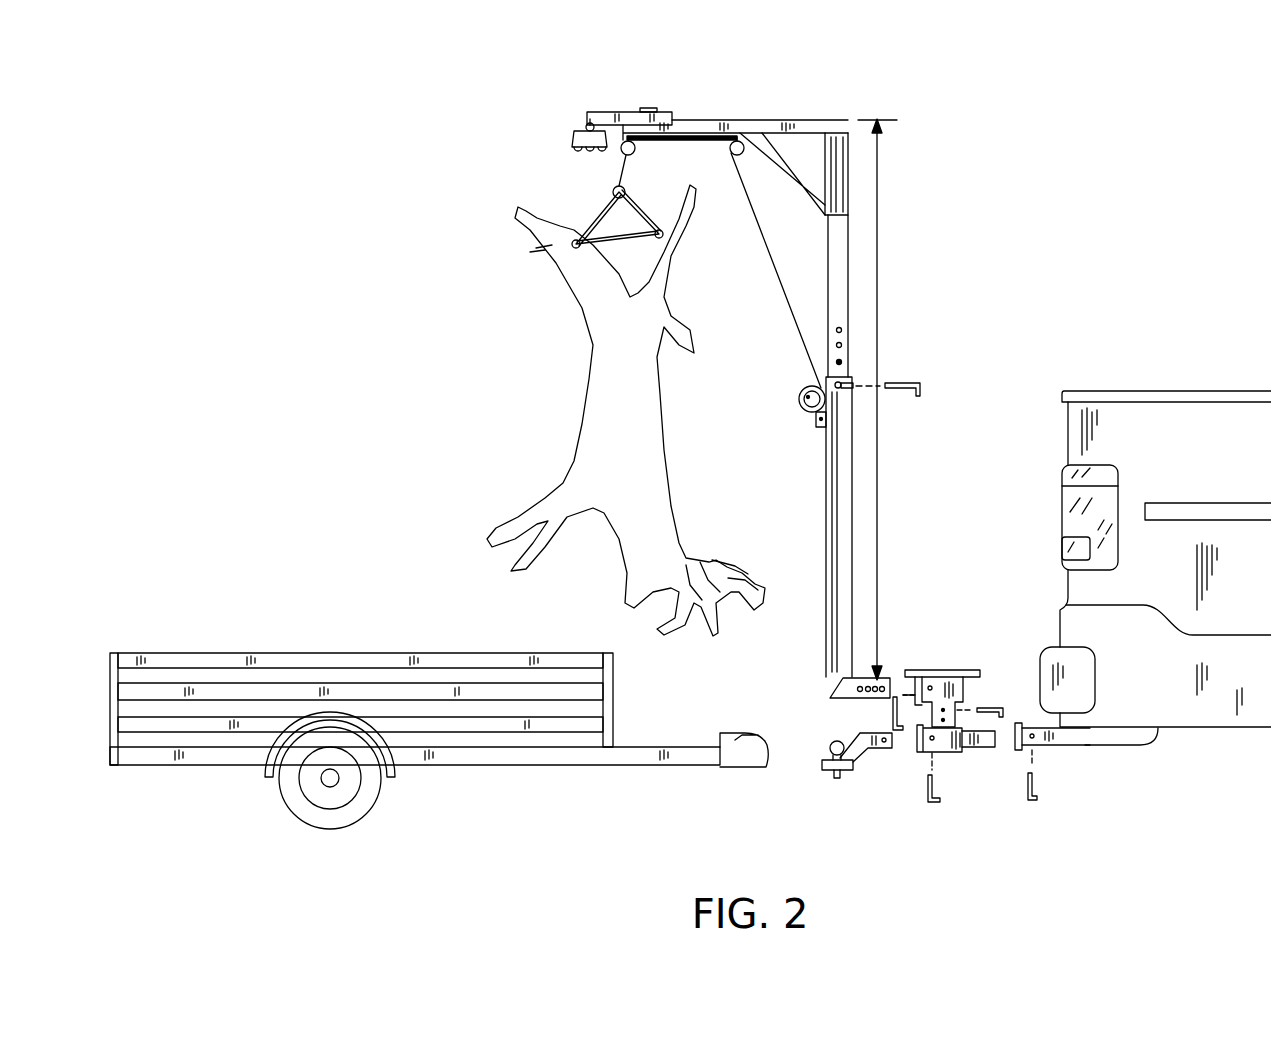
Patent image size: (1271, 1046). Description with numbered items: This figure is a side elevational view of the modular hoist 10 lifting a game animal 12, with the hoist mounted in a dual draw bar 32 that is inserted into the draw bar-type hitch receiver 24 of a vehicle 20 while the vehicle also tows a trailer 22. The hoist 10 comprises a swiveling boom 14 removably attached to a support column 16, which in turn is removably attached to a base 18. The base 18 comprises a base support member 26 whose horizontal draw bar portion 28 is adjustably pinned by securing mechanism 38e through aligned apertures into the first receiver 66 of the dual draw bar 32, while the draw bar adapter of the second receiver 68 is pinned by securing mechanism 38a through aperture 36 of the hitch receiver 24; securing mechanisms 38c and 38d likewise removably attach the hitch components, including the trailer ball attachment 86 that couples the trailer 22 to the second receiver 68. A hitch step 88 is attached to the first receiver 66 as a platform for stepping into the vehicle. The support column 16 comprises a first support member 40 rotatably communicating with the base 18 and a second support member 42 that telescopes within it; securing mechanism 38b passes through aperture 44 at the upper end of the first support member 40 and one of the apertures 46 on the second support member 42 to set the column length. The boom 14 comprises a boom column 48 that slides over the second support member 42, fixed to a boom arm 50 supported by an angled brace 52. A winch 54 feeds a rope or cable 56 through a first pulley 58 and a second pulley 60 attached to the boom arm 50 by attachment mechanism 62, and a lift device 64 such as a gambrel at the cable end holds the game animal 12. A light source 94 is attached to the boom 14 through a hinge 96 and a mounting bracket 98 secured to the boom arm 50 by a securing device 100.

The modular hoist 10 is at (998, 222).
The game animal 12 is at (600, 387).
The swiveling boom 14 is at (767, 107).
The support column 16 is at (792, 504).
The base 18 is at (786, 702).
The vehicle 20 is at (1181, 422).
The trailer 22 is at (695, 757).
The draw bar-type hitch receiver 24 is at (1132, 735).
The base support member 26 is at (822, 687).
The draw bar portion 28 is at (879, 665).
The dual draw bar 32 is at (969, 692).
The aperture 36 is at (1037, 733).
The securing mechanism 38a is at (1035, 783).
The securing mechanism 38b is at (921, 389).
The securing mechanism 38c is at (1001, 703).
The securing mechanism 38d is at (927, 787).
The securing mechanism 38e is at (890, 711).
The first support member 40 is at (832, 634).
The second support member 42 is at (838, 262).
The aperture 44 is at (846, 380).
The apertures 46 is at (845, 340).
The boom column 48 is at (850, 186).
The boom arm 50 is at (815, 123).
The angled brace 52 is at (799, 176).
The winch 54 is at (812, 424).
The rope or cable 56 is at (786, 292).
The first pulley 58 is at (737, 157).
The second pulley 60 is at (622, 162).
The attachment mechanism 62 is at (722, 144).
The lift device 64 is at (575, 240).
The first receiver 66 is at (985, 736).
The second receiver 68 is at (958, 760).
The trailer ball attachment 86 is at (860, 764).
The hitch step 88 is at (934, 667).
The light source 94 is at (571, 134).
The hinge 96 is at (587, 124).
The mounting bracket 98 is at (598, 112).
The securing device 100 is at (648, 108).